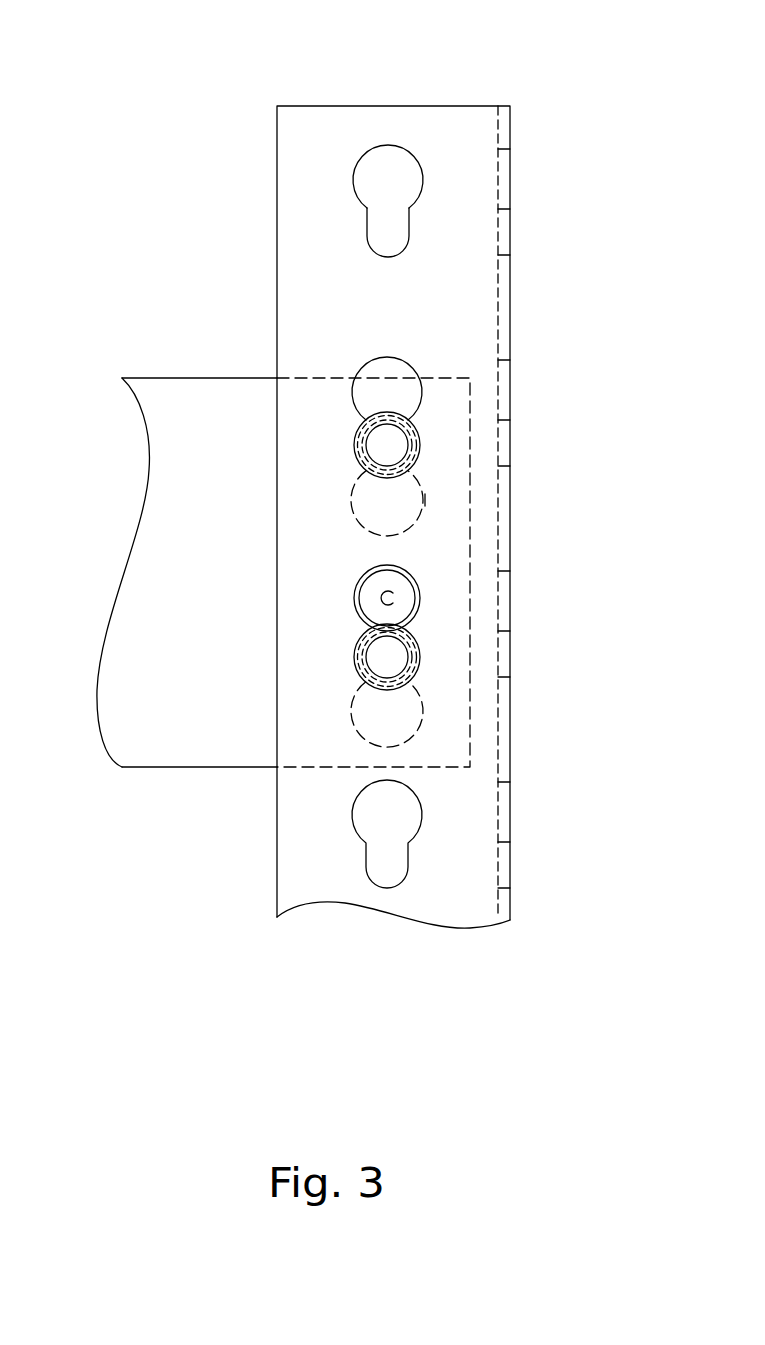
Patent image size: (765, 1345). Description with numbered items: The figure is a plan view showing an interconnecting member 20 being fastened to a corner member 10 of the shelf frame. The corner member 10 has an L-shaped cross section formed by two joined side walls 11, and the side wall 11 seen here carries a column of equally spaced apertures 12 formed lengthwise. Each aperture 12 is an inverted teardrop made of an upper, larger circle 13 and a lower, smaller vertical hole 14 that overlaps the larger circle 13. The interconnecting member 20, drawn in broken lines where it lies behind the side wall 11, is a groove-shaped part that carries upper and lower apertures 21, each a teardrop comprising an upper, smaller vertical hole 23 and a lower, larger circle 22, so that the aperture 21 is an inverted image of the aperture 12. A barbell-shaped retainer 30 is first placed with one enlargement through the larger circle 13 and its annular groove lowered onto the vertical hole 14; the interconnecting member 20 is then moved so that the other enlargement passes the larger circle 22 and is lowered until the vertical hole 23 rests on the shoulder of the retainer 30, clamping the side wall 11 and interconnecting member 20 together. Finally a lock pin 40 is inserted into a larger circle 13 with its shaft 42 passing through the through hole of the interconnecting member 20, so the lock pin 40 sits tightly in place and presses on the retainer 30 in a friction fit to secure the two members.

The corner member 10 is at (418, 104).
The side wall 11 is at (477, 118).
The aperture 12 is at (400, 509).
The larger circle 13 is at (368, 177).
The vertical hole 14 is at (388, 238).
The interconnecting member 20 is at (177, 377).
The aperture 21 is at (423, 507).
The larger circle 22 is at (408, 500).
The vertical hole 23 is at (430, 447).
The retainer 30 is at (352, 594).
The lock pin 40 is at (490, 630).
The shaft 42 is at (390, 597).